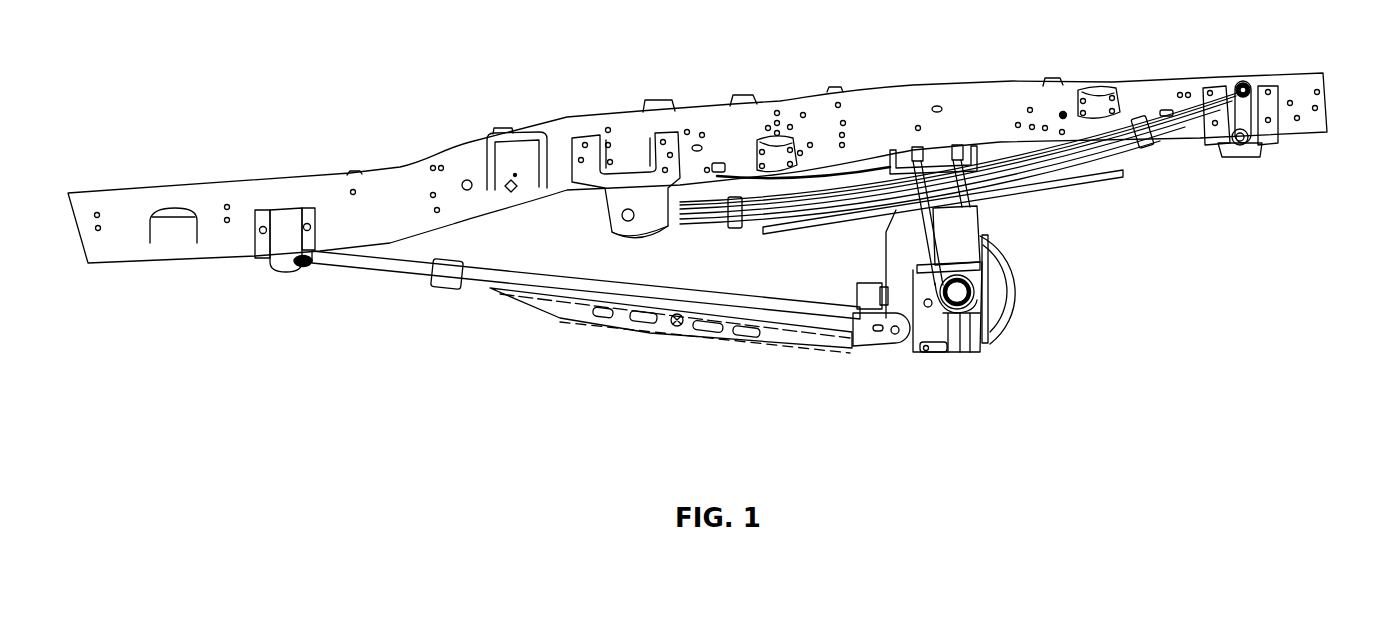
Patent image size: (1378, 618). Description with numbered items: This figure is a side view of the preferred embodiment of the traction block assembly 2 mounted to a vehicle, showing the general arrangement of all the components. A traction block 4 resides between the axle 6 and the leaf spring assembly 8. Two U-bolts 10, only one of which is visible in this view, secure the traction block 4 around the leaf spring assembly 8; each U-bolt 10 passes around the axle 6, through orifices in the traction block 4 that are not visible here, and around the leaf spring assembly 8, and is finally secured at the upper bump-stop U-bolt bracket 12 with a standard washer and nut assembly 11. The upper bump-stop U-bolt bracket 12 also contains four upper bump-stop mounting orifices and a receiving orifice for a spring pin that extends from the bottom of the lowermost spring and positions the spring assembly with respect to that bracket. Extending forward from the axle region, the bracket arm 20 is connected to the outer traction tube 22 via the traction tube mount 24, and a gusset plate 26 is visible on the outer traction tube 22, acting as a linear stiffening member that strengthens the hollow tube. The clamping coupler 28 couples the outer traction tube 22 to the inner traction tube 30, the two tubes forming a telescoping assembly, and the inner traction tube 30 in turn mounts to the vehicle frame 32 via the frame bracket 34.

The traction block assembly 2 is at (561, 304).
The traction block 4 is at (960, 233).
The axle 6 is at (978, 315).
The leaf spring assembly 8 is at (1147, 142).
The U-bolt 10 is at (910, 200).
The washer and nut assembly 11 is at (917, 148).
The upper bump-stop U-bolt bracket 12 is at (967, 146).
The bracket arm 20 is at (898, 285).
The outer traction tube 22 is at (680, 318).
The traction tube mount 24 is at (884, 344).
The gusset plate 26 is at (598, 323).
The clamping coupler 28 is at (444, 280).
The inner traction tube 30 is at (362, 263).
The vehicle frame 32 is at (133, 205).
The frame bracket 34 is at (281, 250).